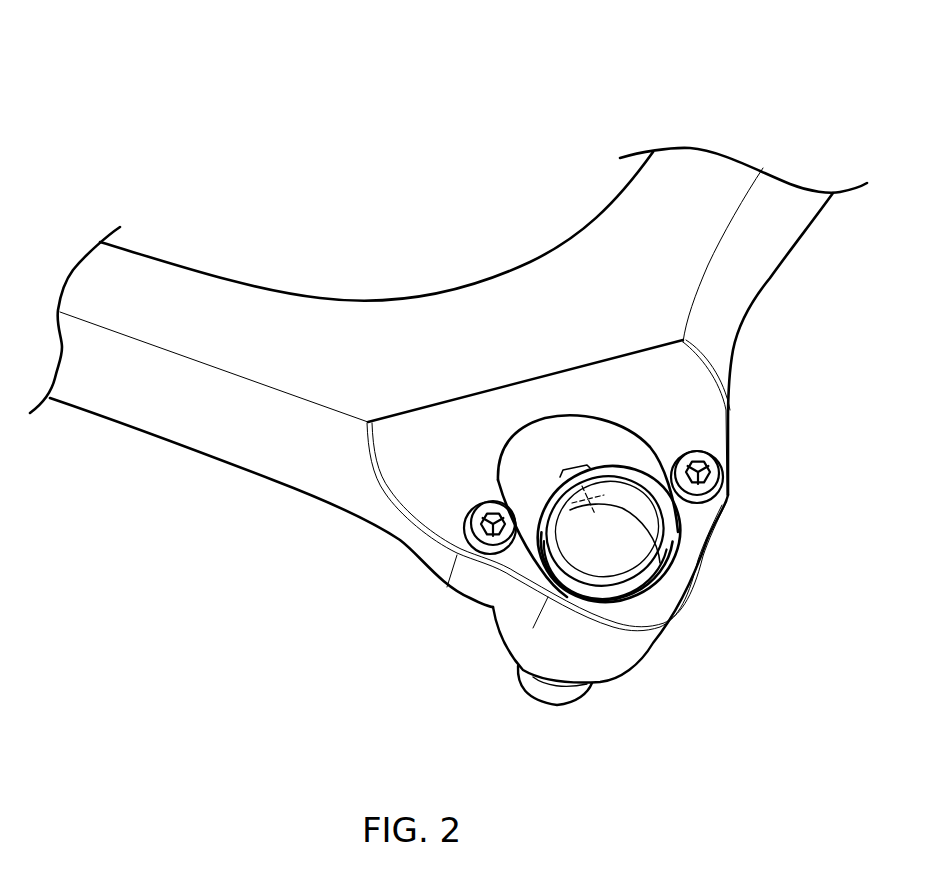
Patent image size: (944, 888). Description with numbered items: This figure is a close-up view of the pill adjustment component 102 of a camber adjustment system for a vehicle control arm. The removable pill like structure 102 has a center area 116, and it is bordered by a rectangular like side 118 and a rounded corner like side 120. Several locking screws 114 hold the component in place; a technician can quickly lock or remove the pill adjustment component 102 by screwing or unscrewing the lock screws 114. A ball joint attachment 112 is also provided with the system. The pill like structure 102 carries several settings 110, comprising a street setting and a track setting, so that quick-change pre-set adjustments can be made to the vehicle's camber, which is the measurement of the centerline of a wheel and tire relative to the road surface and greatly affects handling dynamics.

The pill shaped adjustment component 102 is at (686, 538).
The settings 110 is at (610, 617).
The ball joint attachment 112 is at (609, 705).
The locking screws 114 is at (705, 458).
The center area 116 is at (655, 520).
The rectangular like side 118 is at (653, 470).
The rounded corner like side 120 is at (590, 417).